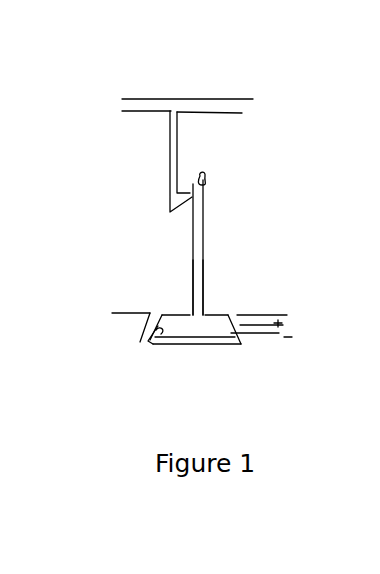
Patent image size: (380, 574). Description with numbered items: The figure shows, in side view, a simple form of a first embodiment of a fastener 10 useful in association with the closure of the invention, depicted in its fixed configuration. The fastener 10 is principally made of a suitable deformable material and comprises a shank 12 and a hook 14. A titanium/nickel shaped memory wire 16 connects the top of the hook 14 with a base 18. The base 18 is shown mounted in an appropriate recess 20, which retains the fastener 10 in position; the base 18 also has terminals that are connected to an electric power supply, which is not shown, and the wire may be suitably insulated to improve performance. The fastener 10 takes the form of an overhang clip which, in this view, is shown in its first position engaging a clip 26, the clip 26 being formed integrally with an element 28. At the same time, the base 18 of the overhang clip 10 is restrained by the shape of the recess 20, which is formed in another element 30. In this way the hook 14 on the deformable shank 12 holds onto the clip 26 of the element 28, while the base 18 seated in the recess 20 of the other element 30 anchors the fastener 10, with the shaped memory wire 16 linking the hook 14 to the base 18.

The fastener 10 is at (243, 241).
The shank 12 is at (190, 247).
The hook 14 is at (212, 181).
The shaped memory wire 16 is at (213, 278).
The base 18 is at (165, 327).
The recess 20 is at (150, 321).
The clip 26 is at (167, 208).
The element 28 is at (205, 102).
The another element 30 is at (265, 342).